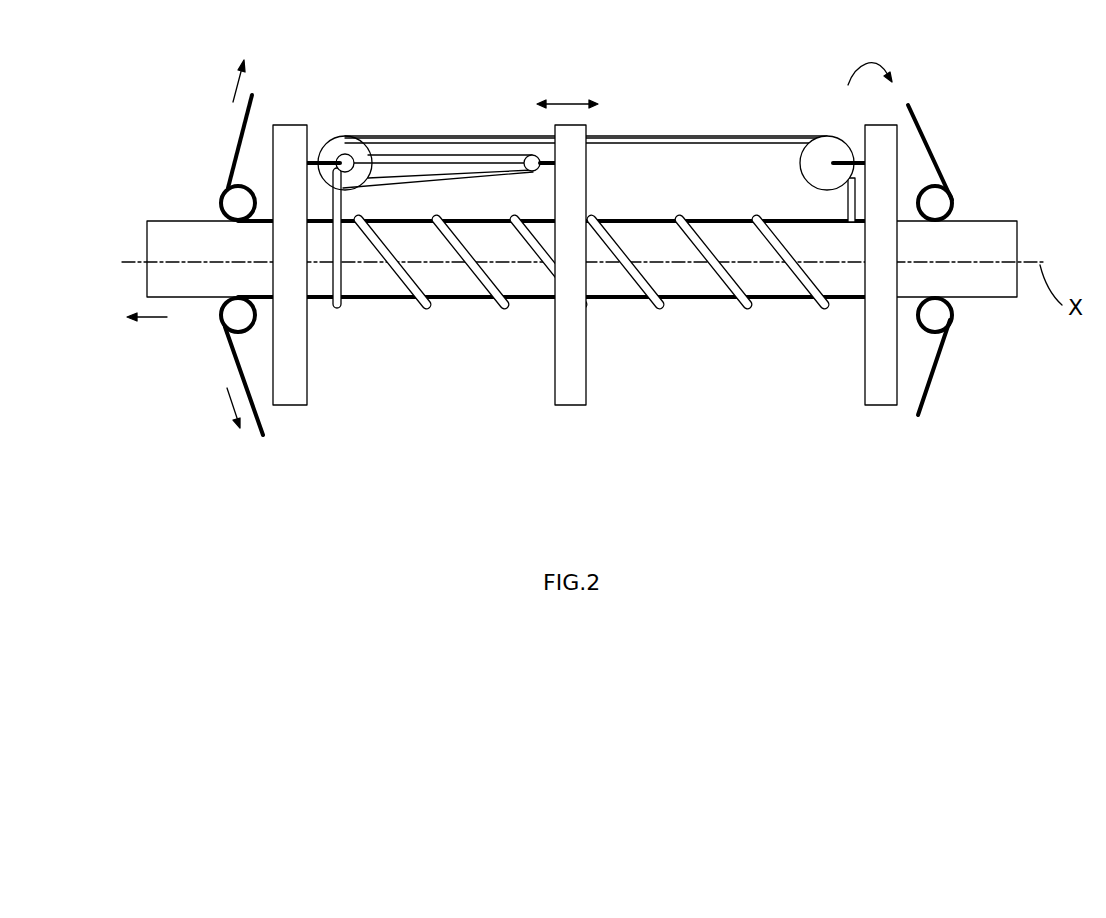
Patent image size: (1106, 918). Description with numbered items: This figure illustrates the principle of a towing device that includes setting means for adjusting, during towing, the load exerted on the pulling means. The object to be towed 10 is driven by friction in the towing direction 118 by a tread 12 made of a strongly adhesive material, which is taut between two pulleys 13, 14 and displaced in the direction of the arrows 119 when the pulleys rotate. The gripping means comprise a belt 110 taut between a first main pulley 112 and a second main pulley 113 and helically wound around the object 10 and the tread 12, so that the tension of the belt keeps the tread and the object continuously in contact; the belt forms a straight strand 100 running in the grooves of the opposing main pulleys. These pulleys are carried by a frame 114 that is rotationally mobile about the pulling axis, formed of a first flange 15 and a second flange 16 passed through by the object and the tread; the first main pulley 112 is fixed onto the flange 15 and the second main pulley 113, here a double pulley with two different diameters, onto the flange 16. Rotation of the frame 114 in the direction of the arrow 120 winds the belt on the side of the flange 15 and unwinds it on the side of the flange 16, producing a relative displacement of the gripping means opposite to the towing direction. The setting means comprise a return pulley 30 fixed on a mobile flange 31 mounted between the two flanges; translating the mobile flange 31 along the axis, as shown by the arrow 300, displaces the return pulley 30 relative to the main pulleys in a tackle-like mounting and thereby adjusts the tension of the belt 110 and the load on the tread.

The object to be towed 10 is at (1000, 238).
The tread 12 is at (265, 433).
The pulley 13 is at (940, 200).
The pulley 14 is at (243, 203).
The first flange 15 is at (882, 155).
The second flange 16 is at (283, 142).
The return pulley 30 is at (520, 150).
The mobile flange 31 is at (578, 170).
The straight strand 100 is at (722, 138).
The belt 110 is at (666, 305).
The first main pulley 112 is at (815, 165).
The second main pulley 113 is at (338, 147).
The frame 114 is at (323, 378).
The towing direction 118 is at (155, 318).
The arrows indicating tread displacement direction 119 is at (237, 85).
The arrow indicating frame rotation direction 120 is at (880, 48).
The arrow indicating mobile flange translation 300 is at (560, 100).